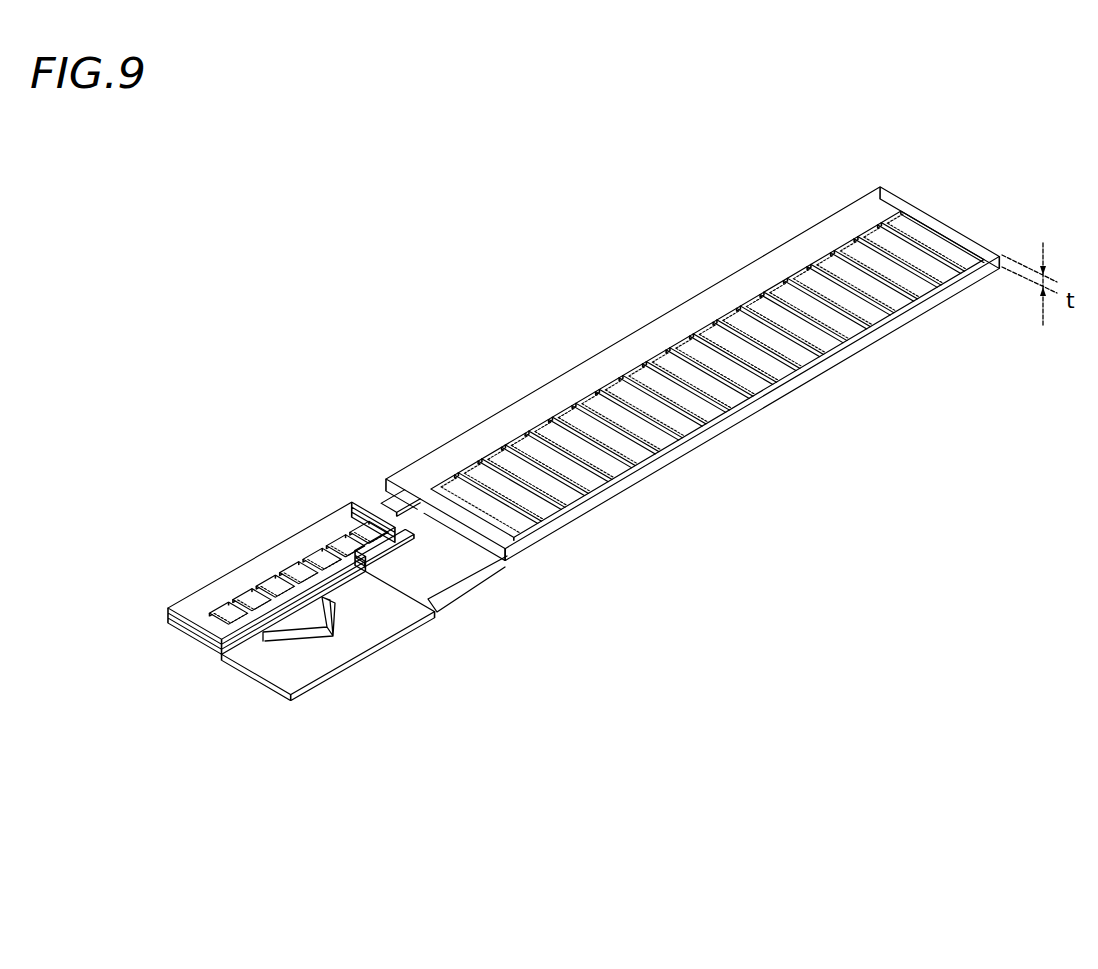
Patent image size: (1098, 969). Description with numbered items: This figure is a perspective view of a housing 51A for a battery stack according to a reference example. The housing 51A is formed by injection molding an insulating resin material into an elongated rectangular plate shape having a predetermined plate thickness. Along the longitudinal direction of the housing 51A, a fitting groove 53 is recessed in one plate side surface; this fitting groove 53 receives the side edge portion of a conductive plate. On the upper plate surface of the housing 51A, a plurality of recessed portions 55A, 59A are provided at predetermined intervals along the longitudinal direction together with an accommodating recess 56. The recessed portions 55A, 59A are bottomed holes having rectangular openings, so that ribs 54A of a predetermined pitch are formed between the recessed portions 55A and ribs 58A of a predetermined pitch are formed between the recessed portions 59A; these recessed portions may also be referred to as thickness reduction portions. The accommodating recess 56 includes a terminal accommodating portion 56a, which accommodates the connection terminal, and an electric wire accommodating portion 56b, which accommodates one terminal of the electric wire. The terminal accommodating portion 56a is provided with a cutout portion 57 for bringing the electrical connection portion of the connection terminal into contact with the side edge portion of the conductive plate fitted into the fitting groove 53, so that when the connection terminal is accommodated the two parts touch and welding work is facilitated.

The housing 51A is at (525, 386).
The fitting groove 53 is at (748, 290).
The ribs 54A is at (828, 295).
The recessed portions 55A is at (915, 248).
The accommodating recess 56 is at (402, 647).
The terminal accommodating portion 56a is at (418, 522).
The electric wire accommodating portion 56b is at (343, 610).
The cutout portion 57 is at (395, 527).
The ribs 58A is at (313, 552).
The recessed portions 59A is at (257, 600).